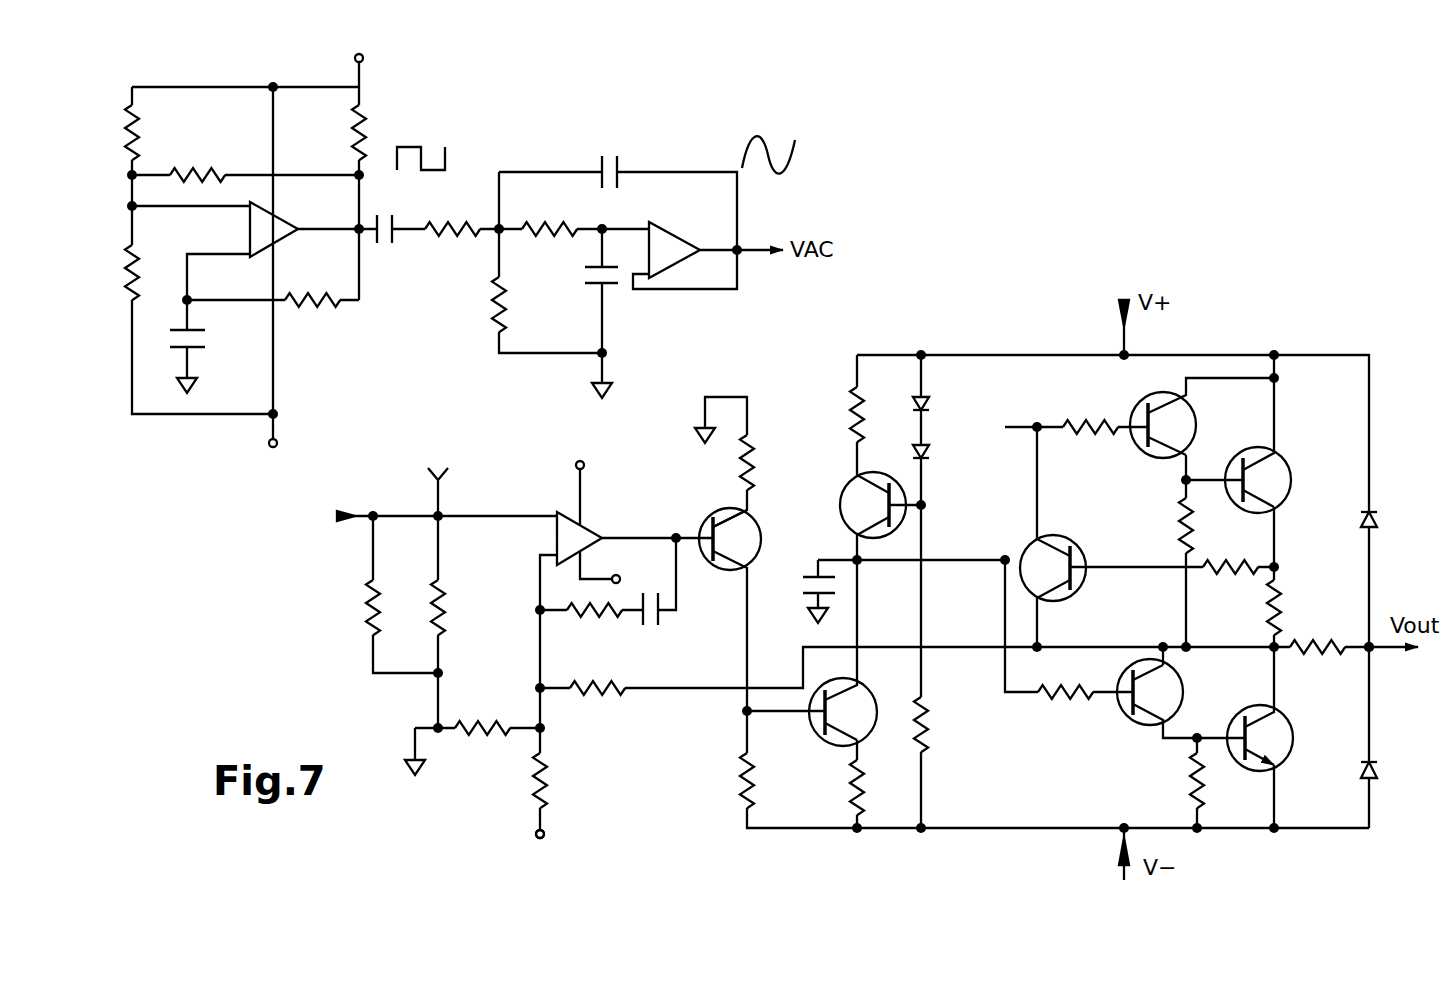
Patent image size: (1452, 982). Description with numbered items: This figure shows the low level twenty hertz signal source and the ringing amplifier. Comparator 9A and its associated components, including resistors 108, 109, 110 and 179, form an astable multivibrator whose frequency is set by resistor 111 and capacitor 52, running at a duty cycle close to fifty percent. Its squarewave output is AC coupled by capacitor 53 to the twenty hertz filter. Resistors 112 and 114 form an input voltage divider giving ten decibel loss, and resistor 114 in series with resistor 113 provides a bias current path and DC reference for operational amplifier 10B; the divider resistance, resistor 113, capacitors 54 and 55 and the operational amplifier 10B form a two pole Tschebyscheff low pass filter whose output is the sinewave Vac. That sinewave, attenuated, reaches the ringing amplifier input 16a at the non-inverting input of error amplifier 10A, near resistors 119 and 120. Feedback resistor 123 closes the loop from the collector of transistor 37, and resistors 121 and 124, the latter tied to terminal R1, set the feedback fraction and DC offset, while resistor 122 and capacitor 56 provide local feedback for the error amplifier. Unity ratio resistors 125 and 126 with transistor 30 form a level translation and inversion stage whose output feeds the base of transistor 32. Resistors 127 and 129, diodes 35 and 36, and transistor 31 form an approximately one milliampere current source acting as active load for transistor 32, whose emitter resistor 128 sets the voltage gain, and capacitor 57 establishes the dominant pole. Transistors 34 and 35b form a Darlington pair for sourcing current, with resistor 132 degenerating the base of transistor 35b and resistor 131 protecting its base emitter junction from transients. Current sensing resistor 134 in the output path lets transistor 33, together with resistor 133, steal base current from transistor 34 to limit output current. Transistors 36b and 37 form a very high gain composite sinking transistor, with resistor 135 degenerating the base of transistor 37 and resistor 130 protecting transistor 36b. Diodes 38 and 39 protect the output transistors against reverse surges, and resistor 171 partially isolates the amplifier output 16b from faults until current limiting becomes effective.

The resistor R108 108 is at (164, 129).
The resistor R109 109 is at (215, 157).
The resistor R110 110 is at (161, 263).
The resistor R111 111 is at (317, 315).
The resistor R179 179 is at (393, 125).
The capacitor C52 52 is at (210, 351).
The capacitor C53 53 is at (387, 214).
The comparator Z9A 9A is at (292, 232).
The resistor R112 112 is at (453, 213).
The resistor R113 113 is at (551, 213).
The resistor R114 114 is at (468, 304).
The capacitor C54 54 is at (586, 291).
The capacitor C55 55 is at (632, 160).
The operational amplifier Z10B 10B is at (687, 240).
The input of ringing amplifier 16a is at (345, 483).
The resistor R119 119 is at (306, 604).
The resistor R120 120 is at (471, 609).
The resistor R121 121 is at (483, 712).
The operational amplifier Z10A 10A is at (551, 538).
The resistor R122 122 is at (592, 625).
The capacitor C56 56 is at (669, 624).
The feedback resistor R123 123 is at (599, 704).
The resistor R124 124 is at (573, 780).
The terminal R1 is at (540, 850).
The transistor Q30 30 is at (714, 528).
The resistor R125 125 is at (780, 458).
The capacitor C57 57 is at (798, 595).
The transistor Q31 31 is at (853, 504).
The resistor R127 127 is at (829, 408).
The diode CR35 35 is at (955, 389).
The diode CR36 36 is at (955, 442).
The transistor Q32 32 is at (859, 704).
The resistor R126 126 is at (724, 772).
The resistor R128 128 is at (827, 787).
The resistor R129 129 is at (955, 724).
The resistor R131 131 is at (1088, 413).
The transistor Q34 34 is at (1187, 425).
The transistor Q35 35b is at (1277, 474).
The resistor R132 132 is at (1155, 525).
The transistor Q33 33 is at (1074, 575).
The resistor R133 133 is at (1227, 577).
The current sensing resistor R134 134 is at (1308, 602).
The diode CR38 38 is at (1397, 532).
The resistor R171 171 is at (1323, 660).
The output of ringing amplifier 16b is at (1399, 660).
The resistor R130 130 is at (1061, 713).
The transistor Q36 36b is at (1172, 692).
The transistor Q37 37 is at (1280, 745).
The resistor R135 135 is at (1163, 780).
The diode CR39 39 is at (1399, 757).